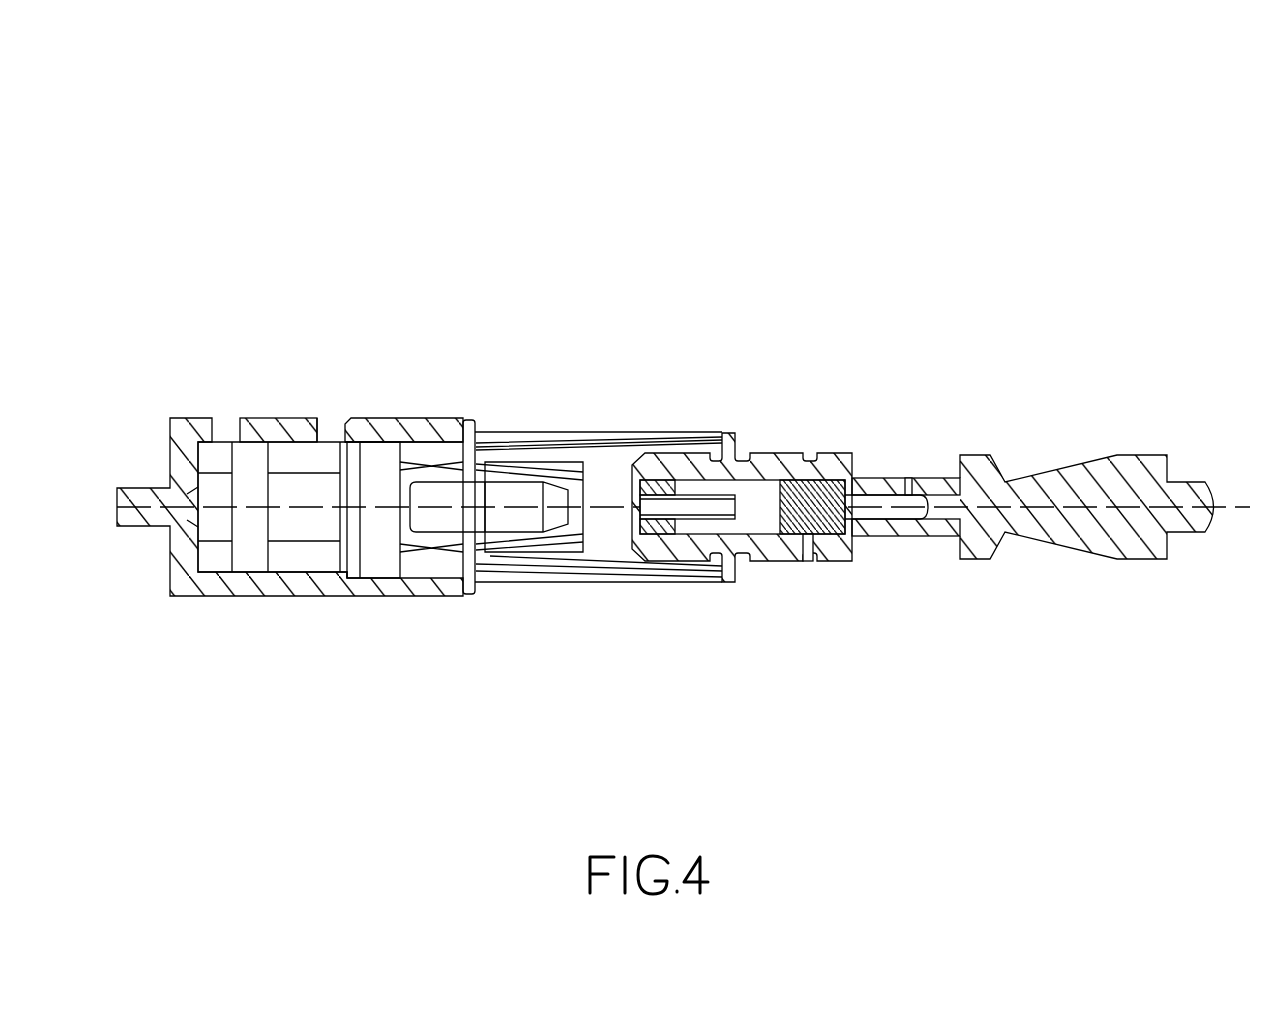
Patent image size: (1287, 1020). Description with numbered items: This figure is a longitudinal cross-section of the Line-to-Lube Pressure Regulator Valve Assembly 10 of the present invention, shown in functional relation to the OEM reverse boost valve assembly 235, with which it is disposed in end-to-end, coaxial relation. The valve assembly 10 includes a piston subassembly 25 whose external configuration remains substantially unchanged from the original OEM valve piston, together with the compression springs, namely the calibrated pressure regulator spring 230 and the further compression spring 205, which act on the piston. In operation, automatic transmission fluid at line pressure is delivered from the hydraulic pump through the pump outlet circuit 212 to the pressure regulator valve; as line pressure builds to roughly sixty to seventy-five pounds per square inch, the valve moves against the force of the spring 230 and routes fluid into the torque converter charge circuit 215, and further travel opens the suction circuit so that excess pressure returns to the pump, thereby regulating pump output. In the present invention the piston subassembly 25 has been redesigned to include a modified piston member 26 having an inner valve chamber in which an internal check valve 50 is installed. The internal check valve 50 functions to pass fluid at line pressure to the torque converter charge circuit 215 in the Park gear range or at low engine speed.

The Line-to-Lube Pressure Regulator Valve Assembly 10 is at (683, 390).
The reverse boost valve assembly 235 is at (325, 365).
The compression spring 205 is at (500, 585).
The pressure regulator spring 230 is at (600, 583).
The piston subassembly 25 is at (812, 494).
The torque converter charge circuit 215 is at (808, 567).
The pump outlet circuit 212 is at (908, 448).
The internal check valve 50 is at (852, 544).
The modified piston member 26 is at (1060, 472).